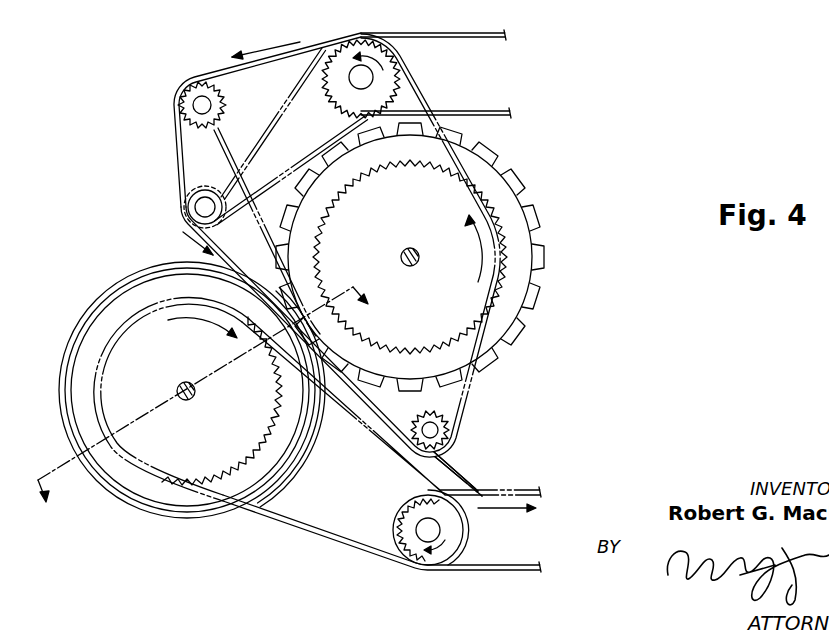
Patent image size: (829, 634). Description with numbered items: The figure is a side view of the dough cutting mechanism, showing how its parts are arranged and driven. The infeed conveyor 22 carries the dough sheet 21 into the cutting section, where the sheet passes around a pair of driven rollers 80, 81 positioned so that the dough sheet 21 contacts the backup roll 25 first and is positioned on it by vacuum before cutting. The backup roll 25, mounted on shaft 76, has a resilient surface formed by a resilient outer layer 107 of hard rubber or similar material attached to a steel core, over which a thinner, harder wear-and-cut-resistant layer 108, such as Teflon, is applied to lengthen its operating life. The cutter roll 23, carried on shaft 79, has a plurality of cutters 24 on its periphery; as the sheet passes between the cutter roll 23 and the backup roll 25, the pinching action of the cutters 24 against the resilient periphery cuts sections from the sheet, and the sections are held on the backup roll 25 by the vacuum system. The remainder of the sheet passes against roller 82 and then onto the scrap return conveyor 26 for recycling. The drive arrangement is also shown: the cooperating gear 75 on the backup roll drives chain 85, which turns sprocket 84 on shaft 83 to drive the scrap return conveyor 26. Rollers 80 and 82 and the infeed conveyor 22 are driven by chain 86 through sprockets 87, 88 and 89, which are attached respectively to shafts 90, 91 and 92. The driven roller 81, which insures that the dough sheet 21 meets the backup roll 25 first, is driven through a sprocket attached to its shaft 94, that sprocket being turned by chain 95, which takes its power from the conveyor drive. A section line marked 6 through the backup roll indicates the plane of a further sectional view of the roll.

The dough sheet 21 is at (440, 33).
The infeed conveyor 22 is at (468, 38).
The cutter roll 23 is at (503, 217).
The cutters 24 is at (530, 250).
The backup roll 25 is at (120, 307).
The scrap return conveyor 26 is at (473, 498).
The section line 6- 6 is at (209, 406).
The cooperating gear 75 is at (176, 500).
The shaft 76 is at (186, 382).
The shaft 79 is at (412, 249).
The driven roller 80 is at (224, 98).
The driven roller 81 is at (222, 188).
The roller 82 is at (448, 413).
The shaft 83 is at (425, 538).
The sprocket 84 is at (403, 515).
The chain 85 is at (316, 532).
The chain 86 is at (466, 168).
The sprocket 87 is at (222, 110).
The sprocket 88 is at (448, 440).
The sprocket 89 is at (400, 78).
The shaft 90 is at (178, 98).
The shaft 91 is at (437, 450).
The shaft 92 is at (403, 55).
The shaft 94 is at (188, 218).
The chain 95 is at (265, 128).
The resilient outer layer 107 is at (297, 424).
The wear-and-cut-resistant layer 108 is at (280, 462).